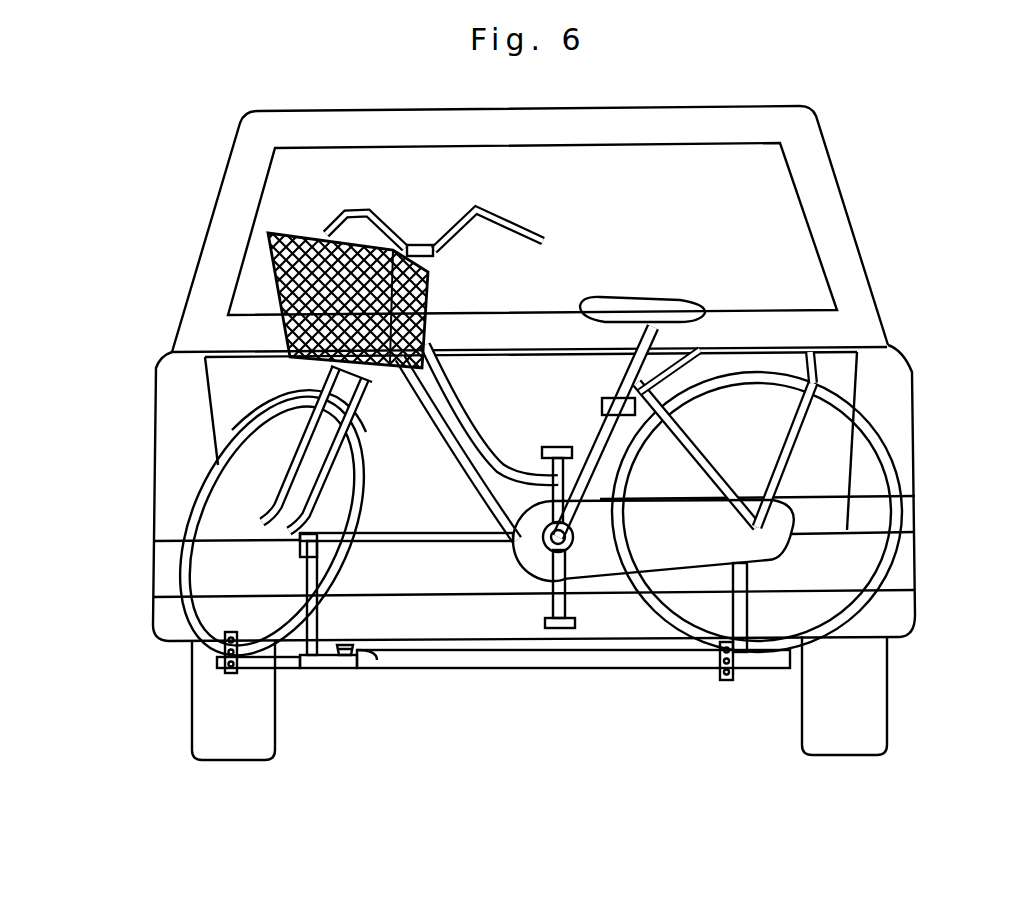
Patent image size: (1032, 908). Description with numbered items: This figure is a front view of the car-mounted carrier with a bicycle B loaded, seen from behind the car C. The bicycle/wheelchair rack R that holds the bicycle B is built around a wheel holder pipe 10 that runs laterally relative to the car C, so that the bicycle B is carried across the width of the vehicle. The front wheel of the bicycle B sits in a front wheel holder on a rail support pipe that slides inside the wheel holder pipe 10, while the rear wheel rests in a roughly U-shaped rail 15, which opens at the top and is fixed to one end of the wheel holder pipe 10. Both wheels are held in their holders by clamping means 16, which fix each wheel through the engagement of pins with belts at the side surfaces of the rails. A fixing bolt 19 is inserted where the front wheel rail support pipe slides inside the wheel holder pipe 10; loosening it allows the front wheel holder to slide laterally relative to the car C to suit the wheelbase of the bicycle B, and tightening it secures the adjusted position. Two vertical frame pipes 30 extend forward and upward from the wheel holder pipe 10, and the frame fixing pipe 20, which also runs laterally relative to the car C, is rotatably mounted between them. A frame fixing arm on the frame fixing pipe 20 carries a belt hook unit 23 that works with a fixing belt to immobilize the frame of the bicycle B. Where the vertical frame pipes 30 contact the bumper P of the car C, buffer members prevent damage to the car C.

The wheel holder pipe 10 is at (540, 668).
The rail 15 is at (750, 662).
The clamping means 16 is at (210, 682).
The fixing bolt 19 is at (378, 657).
The frame fixing pipe 20 is at (405, 532).
The belt hook unit 23 is at (598, 407).
The vertical frame pipe 30 is at (320, 622).
The bicycle B is at (248, 294).
The car C is at (172, 110).
The bumper P is at (494, 583).
The bicycle/wheelchair rack R is at (485, 762).